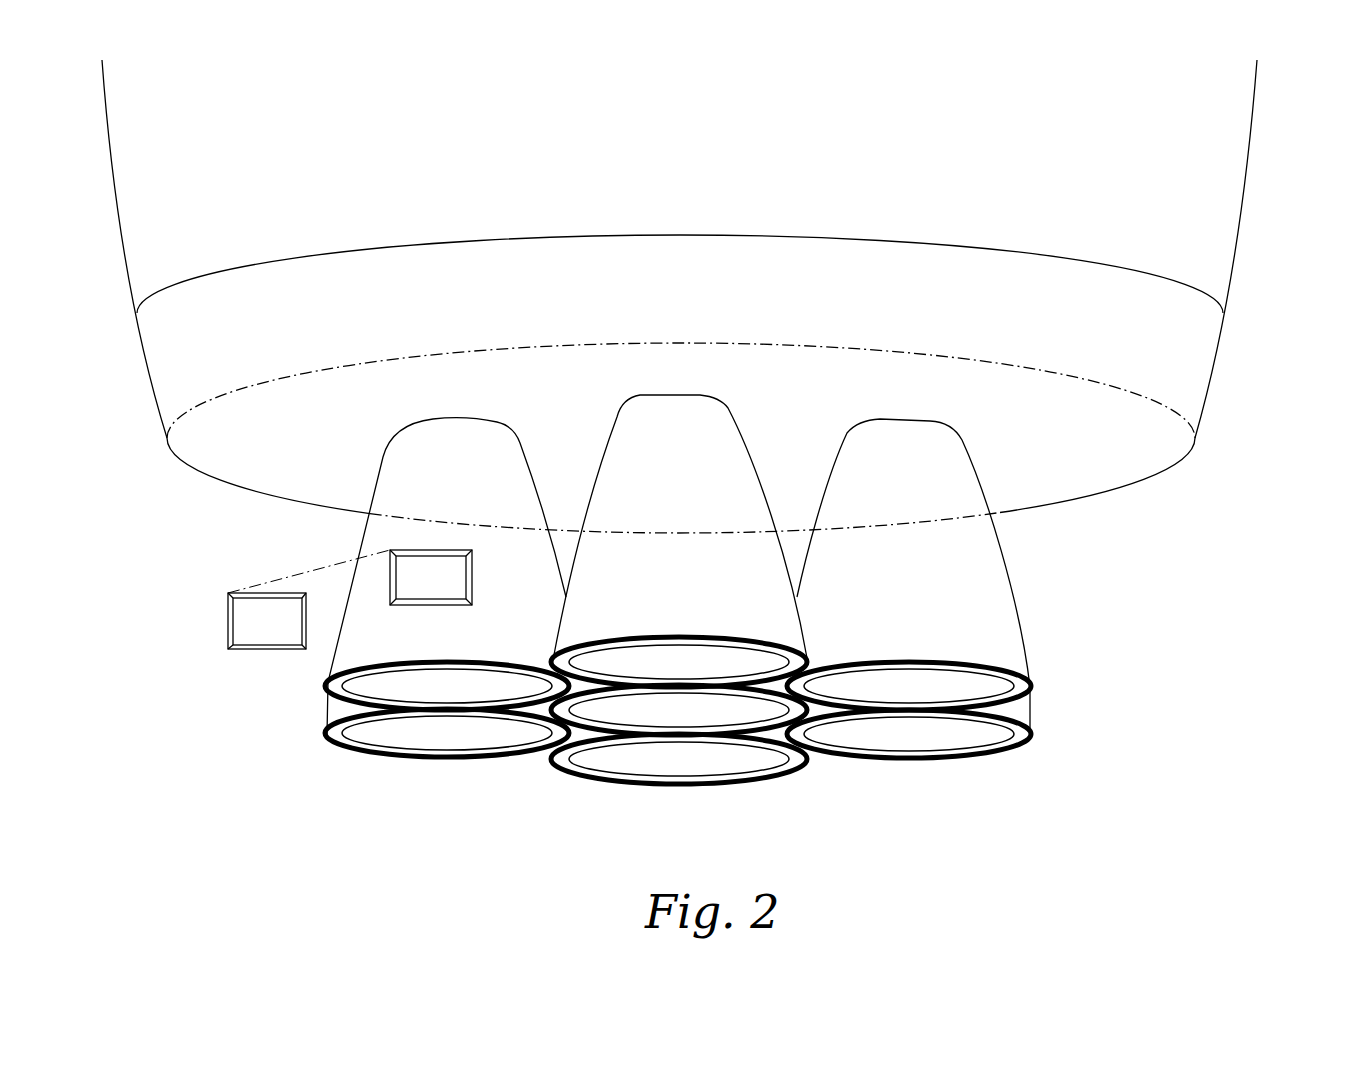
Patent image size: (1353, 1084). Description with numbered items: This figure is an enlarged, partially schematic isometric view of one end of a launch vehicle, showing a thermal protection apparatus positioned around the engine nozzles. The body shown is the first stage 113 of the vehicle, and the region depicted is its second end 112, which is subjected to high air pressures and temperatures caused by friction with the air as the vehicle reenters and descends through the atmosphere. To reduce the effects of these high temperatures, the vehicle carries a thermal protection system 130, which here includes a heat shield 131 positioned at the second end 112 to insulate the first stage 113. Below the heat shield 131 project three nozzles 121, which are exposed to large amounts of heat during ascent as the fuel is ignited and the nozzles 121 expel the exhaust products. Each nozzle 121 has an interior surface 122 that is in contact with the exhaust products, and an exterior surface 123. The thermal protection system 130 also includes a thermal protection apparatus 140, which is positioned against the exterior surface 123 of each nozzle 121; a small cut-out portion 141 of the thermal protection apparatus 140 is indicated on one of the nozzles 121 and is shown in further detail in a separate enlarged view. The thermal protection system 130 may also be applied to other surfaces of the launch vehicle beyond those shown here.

The second end 112 is at (702, 492).
The first stage 113 is at (1097, 153).
The nozzle 121 is at (342, 688).
The interior surface 122 is at (400, 687).
The exterior surface 123 is at (448, 642).
The thermal protection system 130 is at (702, 611).
The heat shield 131 is at (1060, 423).
The thermal protection apparatus 140 is at (380, 647).
The cut-out portion 141 is at (248, 623).